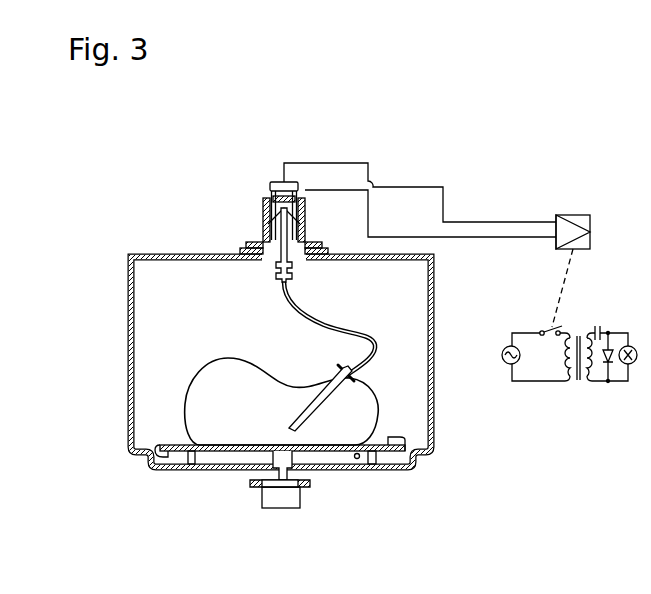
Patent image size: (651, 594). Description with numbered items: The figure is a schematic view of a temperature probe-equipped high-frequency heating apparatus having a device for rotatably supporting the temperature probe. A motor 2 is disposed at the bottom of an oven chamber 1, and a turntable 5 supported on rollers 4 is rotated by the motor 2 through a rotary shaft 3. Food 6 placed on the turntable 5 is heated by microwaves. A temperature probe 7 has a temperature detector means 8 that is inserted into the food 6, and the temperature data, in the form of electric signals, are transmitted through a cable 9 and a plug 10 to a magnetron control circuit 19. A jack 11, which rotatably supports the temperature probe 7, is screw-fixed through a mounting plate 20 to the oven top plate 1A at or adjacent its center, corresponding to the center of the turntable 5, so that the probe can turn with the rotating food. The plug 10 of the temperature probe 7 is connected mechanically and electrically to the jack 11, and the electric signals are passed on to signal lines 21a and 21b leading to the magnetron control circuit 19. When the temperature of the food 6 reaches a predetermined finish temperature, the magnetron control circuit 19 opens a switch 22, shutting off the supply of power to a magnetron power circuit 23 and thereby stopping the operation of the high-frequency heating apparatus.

The oven chamber 1 is at (143, 285).
The oven top plate 1A is at (252, 260).
The motor 2 is at (285, 502).
The rotary shaft 3 is at (278, 470).
The rollers 4 is at (373, 457).
The turntable 5 is at (385, 443).
The food 6 is at (363, 402).
The temperature probe 7 is at (340, 317).
The temperature detector means 8 is at (318, 407).
The cable 9 is at (380, 335).
The plug 10 is at (287, 228).
The jack 11 is at (263, 200).
The magnetron control circuit 19 is at (596, 205).
The mounting plate 20 is at (248, 243).
The signal line 21a is at (427, 188).
The signal line 21b is at (393, 235).
The switch 22 is at (558, 327).
The magnetron power circuit 23 is at (612, 323).